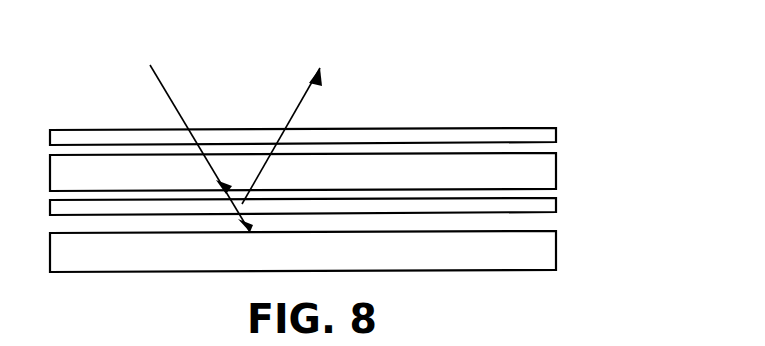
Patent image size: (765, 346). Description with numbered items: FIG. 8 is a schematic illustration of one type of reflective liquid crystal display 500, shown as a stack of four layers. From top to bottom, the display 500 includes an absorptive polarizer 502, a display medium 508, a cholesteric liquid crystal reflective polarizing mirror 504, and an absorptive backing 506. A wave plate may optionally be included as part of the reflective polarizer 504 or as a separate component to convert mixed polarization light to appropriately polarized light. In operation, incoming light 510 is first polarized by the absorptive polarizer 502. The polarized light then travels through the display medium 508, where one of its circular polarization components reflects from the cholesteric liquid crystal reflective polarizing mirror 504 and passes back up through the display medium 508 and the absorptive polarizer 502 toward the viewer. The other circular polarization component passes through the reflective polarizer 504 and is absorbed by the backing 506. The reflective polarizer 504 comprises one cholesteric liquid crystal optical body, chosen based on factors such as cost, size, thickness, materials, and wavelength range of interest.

The reflective liquid crystal display 500 is at (430, 83).
The absorptive polarizer 502 is at (556, 135).
The cholesteric liquid crystal reflective polarizing mirror 504 is at (556, 207).
The absorptive backing 506 is at (556, 248).
The display medium 508 is at (556, 172).
The light 510 is at (162, 82).